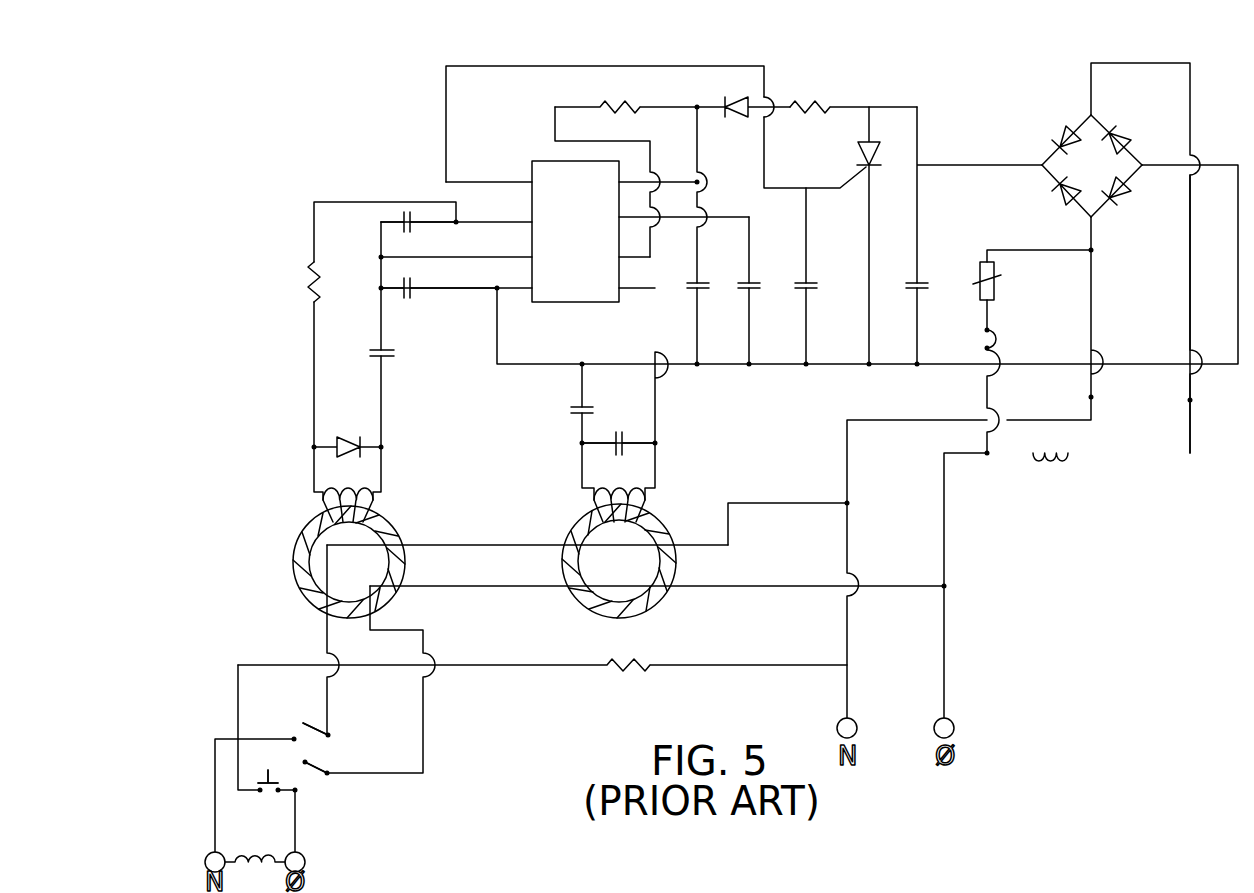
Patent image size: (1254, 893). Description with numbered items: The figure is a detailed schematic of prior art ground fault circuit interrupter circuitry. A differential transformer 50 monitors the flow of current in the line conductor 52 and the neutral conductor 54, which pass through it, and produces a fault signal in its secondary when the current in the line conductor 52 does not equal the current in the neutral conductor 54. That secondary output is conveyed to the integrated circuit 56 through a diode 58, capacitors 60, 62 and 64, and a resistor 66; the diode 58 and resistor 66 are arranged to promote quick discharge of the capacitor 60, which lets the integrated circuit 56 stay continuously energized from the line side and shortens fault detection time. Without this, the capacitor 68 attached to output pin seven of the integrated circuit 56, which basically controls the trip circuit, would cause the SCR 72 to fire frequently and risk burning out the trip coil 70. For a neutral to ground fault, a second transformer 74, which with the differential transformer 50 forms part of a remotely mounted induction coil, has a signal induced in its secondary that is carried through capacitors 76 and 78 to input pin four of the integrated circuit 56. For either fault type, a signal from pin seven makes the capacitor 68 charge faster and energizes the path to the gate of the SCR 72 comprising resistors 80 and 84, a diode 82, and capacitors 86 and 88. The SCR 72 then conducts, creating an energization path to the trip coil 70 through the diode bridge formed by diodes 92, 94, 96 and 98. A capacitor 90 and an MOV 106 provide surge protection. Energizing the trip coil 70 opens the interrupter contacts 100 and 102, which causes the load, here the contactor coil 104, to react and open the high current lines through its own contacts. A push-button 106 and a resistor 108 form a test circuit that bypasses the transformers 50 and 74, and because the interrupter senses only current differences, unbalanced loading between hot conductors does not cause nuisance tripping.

The differential transformer 50 is at (388, 518).
The line conductor 52 is at (440, 586).
The neutral conductor 54 is at (452, 545).
The integrated circuit 56 is at (566, 302).
The diode 58 is at (345, 440).
The capacitor 60 is at (388, 350).
The capacitor 62 is at (412, 288).
The capacitor 64 is at (402, 212).
The resistor 66 is at (320, 268).
The capacitor 68 is at (754, 282).
The trip coil 70 is at (1052, 468).
The SCR 72 is at (872, 142).
The transformer 74 is at (655, 512).
The capacitor 76 is at (612, 438).
The capacitor 78 is at (586, 406).
The resistor 80 is at (610, 100).
The diode 82 is at (737, 98).
The resistor 84 is at (798, 100).
The capacitor 86 is at (702, 282).
The capacitor 88 is at (811, 282).
The capacitor 90 is at (912, 282).
The diode bridge diode 92 is at (1112, 132).
The diode bridge diode 94 is at (1063, 130).
The diode bridge diode 96 is at (1062, 200).
The diode bridge diode 98 is at (1115, 196).
The contact 100 is at (312, 727).
The contact 102 is at (310, 766).
The contactor coil 104 is at (255, 856).
The MOV / push-button 106 is at (997, 290).
The resistor 108 is at (643, 660).